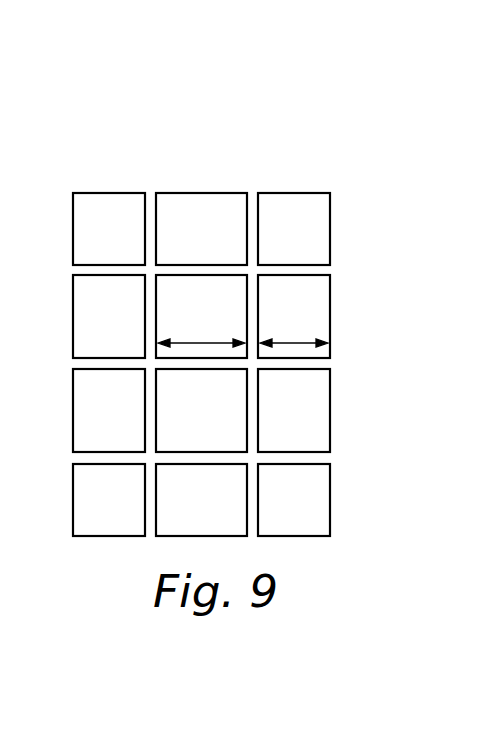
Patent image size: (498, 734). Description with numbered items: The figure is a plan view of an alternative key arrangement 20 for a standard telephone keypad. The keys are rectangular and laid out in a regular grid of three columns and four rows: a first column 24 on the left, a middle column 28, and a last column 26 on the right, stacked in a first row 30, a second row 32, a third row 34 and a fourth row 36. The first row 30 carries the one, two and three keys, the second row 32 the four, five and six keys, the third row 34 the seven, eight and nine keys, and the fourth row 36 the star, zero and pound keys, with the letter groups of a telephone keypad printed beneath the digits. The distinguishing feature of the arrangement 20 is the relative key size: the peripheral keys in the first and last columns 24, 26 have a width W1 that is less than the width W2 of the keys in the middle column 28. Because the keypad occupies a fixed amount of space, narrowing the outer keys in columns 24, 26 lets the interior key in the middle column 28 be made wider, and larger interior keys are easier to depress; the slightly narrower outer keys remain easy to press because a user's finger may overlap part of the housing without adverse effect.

The key arrangement 20 is at (259, 91).
The first column 24 is at (102, 193).
The middle column 28 is at (202, 193).
The last column 26 is at (303, 193).
The first row 30 is at (73, 222).
The second row 32 is at (73, 315).
The third row 34 is at (73, 412).
The fourth row 36 is at (73, 507).
The width of peripheral keys W1 is at (306, 342).
The width of middle-column keys W2 is at (205, 345).